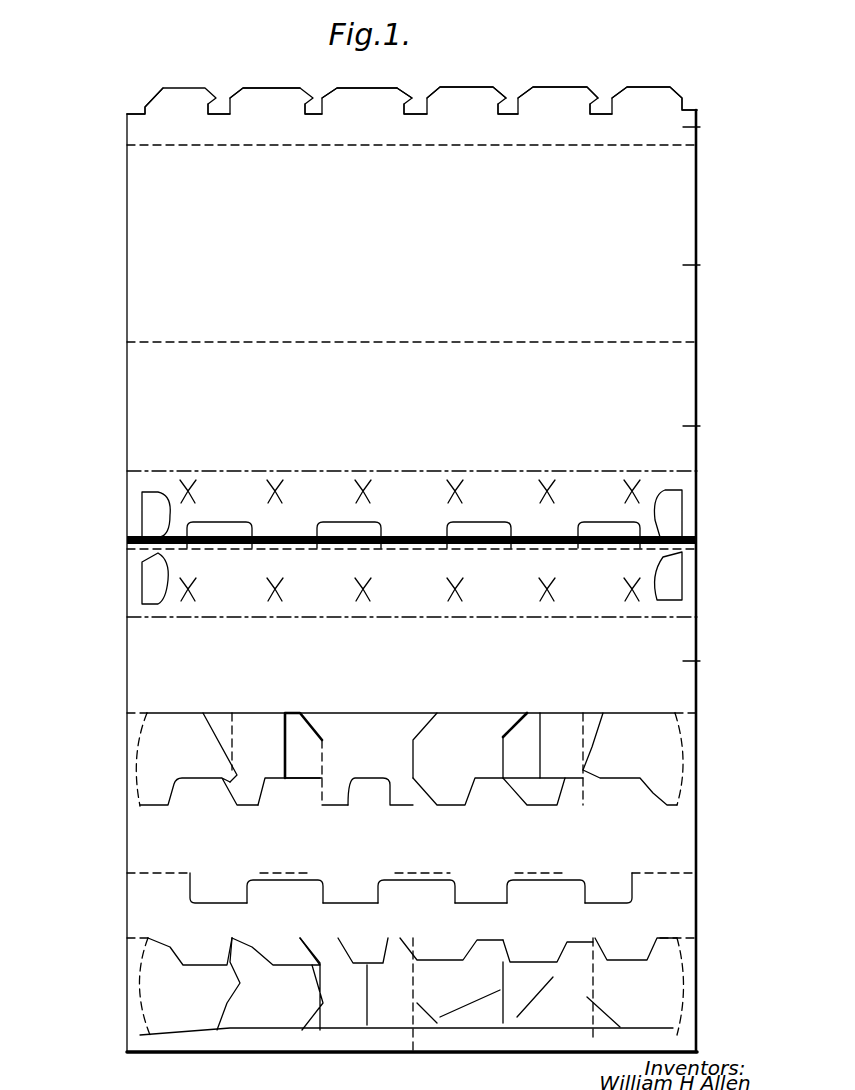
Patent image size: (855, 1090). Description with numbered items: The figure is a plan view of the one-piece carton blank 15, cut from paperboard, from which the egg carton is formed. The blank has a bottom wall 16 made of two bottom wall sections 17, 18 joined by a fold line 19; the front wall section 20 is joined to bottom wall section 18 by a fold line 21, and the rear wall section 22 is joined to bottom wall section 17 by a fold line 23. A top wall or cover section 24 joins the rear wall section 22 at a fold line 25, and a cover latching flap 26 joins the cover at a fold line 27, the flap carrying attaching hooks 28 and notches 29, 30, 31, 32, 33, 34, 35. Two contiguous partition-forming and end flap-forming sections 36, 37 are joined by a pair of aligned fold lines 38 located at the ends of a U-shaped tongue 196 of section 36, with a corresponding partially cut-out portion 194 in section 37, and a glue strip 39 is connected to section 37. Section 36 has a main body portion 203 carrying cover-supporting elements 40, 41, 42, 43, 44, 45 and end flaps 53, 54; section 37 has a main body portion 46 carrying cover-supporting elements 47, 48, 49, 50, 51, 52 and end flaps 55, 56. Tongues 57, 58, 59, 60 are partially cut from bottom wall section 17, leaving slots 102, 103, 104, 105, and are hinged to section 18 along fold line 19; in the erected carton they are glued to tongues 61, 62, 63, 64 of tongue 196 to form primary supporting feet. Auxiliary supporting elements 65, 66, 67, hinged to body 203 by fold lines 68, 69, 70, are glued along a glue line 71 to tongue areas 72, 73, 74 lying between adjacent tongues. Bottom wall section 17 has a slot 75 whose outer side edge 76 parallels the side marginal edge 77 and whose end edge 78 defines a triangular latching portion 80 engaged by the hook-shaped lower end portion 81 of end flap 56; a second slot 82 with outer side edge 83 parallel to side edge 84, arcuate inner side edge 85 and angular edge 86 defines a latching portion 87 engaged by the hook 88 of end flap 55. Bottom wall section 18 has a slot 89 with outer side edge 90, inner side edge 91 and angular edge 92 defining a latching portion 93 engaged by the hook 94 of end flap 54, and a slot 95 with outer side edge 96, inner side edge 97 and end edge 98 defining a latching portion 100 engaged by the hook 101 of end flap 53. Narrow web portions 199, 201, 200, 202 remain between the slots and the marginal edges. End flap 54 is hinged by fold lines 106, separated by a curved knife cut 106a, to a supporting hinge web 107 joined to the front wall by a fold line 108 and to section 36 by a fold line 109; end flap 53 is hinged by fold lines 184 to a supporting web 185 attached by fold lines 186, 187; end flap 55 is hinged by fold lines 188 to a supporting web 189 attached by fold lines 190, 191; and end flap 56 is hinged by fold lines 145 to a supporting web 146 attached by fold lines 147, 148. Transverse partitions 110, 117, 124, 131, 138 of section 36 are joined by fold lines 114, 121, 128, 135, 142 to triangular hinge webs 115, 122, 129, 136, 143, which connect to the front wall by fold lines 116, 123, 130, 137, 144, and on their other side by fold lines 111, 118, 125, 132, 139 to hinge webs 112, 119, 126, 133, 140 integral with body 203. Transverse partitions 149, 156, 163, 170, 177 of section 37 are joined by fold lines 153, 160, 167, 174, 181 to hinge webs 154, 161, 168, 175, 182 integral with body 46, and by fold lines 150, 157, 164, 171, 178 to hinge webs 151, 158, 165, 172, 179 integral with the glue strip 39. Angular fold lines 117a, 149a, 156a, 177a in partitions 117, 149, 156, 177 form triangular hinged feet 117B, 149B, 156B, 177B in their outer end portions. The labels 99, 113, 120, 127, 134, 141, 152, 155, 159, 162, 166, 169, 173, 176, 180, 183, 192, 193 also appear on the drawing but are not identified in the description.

The sheet body 15 is at (709, 409).
The side edge 16 is at (700, 504).
The upper score line 17 is at (408, 506).
The lower score line 18 is at (411, 589).
The panel 19 is at (545, 548).
The edge 20 is at (700, 661).
The fold line 21 is at (697, 617).
The edge 22 is at (700, 426).
The fold line 23 is at (697, 462).
The top panel 24 is at (700, 265).
The fold line 25 is at (692, 342).
The top edge 26 is at (700, 133).
The fold line 27 is at (695, 150).
The hook tab 28 is at (612, 102).
The end step 29 is at (142, 113).
The tab 30 is at (232, 102).
The tab 31 is at (320, 104).
The tab 32 is at (412, 106).
The tab 33 is at (512, 100).
The tab 34 is at (603, 102).
The end step 35 is at (690, 110).
The middle section 36 is at (698, 826).
The lower section 37 is at (678, 925).
The fold line 38 is at (690, 873).
The bottom edge 39 is at (697, 1043).
The tab 40 is at (199, 792).
The tab 41 is at (303, 792).
The tab 42 is at (380, 792).
The tab 43 is at (458, 792).
The tab 44 is at (543, 792).
The tab 45 is at (630, 788).
The fold line 46 is at (660, 925).
The notch 47 is at (190, 954).
The notch 48 is at (276, 954).
The notch 49 is at (363, 954).
The notch 50 is at (451, 995).
The notch 51 is at (548, 981).
The notch 52 is at (635, 989).
The end panel 53 is at (186, 759).
The end panel 54 is at (633, 759).
The end panel 55 is at (163, 986).
The end panel 56 is at (658, 986).
The block 57 is at (219, 534).
The block 58 is at (349, 534).
The block 59 is at (479, 534).
The block 60 is at (609, 534).
The slot 61 is at (218, 888).
The slot 62 is at (350, 892).
The slot 63 is at (481, 892).
The slot 64 is at (608, 888).
The tab 65 is at (285, 891).
The tab 66 is at (416, 891).
The tab 67 is at (546, 891).
The fold 68 is at (310, 880).
The fold 69 is at (450, 880).
The fold 70 is at (567, 880).
The strip 71 is at (290, 548).
The strip 72 is at (283, 524).
The strip 73 is at (422, 524).
The strip 74 is at (547, 524).
The clip 75 is at (676, 502).
The clip edge 76 is at (676, 506).
The clip 77 is at (684, 567).
The clip 78 is at (668, 513).
The adhesive band 80 is at (697, 536).
The panel 81 is at (585, 975).
The clip edge 82 is at (142, 496).
The clip 83 is at (142, 517).
The clip 84 is at (144, 567).
The clip 85 is at (160, 502).
The clip 86 is at (142, 532).
The clip 87 is at (145, 540).
The panel 88 is at (220, 984).
The clip 89 is at (684, 600).
The clip 90 is at (684, 588).
The clip 91 is at (660, 580).
The clip 92 is at (660, 570).
The clip 93 is at (690, 551).
The panel 94 is at (600, 780).
The clip 95 is at (148, 608).
The clip 96 is at (144, 597).
The clip 97 is at (170, 590).
The clip 98 is at (172, 572).
The clip 99 is at (660, 496).
The clip 100 is at (148, 550).
The panel 101 is at (228, 780).
The block 102 is at (222, 522).
The block 103 is at (330, 522).
The block 104 is at (492, 522).
The block 105 is at (598, 522).
The edge 106 is at (700, 772).
The edge 106a is at (697, 752).
The edge 107 is at (697, 730).
The edge 108 is at (697, 702).
The edge 109 is at (697, 792).
The panel 110 is at (561, 759).
The panel 111 is at (565, 767).
The fold 112 is at (583, 806).
The fold 113 is at (615, 806).
The panel 114 is at (578, 725).
The panel 115 is at (607, 714).
The panel 116 is at (595, 715).
The panel 117 is at (476, 745).
The panel 117a is at (451, 730).
The panel 117B is at (439, 766).
The panel 118 is at (475, 768).
The fold 119 is at (492, 806).
The fold 120 is at (527, 806).
The panel 121 is at (500, 718).
The panel 122 is at (503, 713).
The panel 123 is at (527, 713).
The panel 124 is at (378, 745).
The panel 125 is at (378, 768).
The fold 126 is at (413, 802).
The fold 127 is at (437, 805).
The panel 128 is at (395, 722).
The panel 129 is at (413, 713).
The panel 130 is at (437, 713).
The panel 131 is at (340, 748).
The panel 132 is at (343, 768).
The fold 133 is at (320, 800).
The fold 134 is at (322, 808).
The panel 135 is at (338, 715).
The panel 136 is at (330, 713).
The panel 137 is at (297, 713).
The panel 138 is at (277, 759).
The fold 139 is at (235, 800).
The fold 140 is at (230, 782).
The fold 141 is at (222, 805).
The panel 142 is at (240, 715).
The panel 143 is at (222, 713).
The panel 144 is at (210, 713).
The edge 145 is at (697, 1001).
The edge 146 is at (697, 976).
The edge 147 is at (697, 948).
The edge 148 is at (697, 1023).
The panel 149 is at (544, 997).
The panel 149a is at (520, 1005).
The panel 149B is at (515, 974).
The fold 150 is at (572, 1028).
The panel 151 is at (600, 1025).
The fold 152 is at (606, 1028).
The panel 153 is at (584, 946).
The panel 154 is at (601, 946).
The panel 155 is at (591, 940).
The panel 156 is at (458, 1004).
The panel 156a is at (418, 995).
The panel 156B is at (420, 975).
The fold 157 is at (505, 1012).
The fold 158 is at (512, 1022).
The fold 159 is at (510, 1028).
The panel 160 is at (463, 986).
The panel 161 is at (501, 945).
The panel 162 is at (511, 955).
The panel 163 is at (390, 991).
The panel 164 is at (388, 1013).
The fold 165 is at (400, 1045).
The fold 166 is at (437, 1025).
The panel 167 is at (400, 938).
The panel 168 is at (445, 946).
The panel 169 is at (418, 945).
The panel 170 is at (348, 995).
The fold 171 is at (330, 1028).
The fold 172 is at (316, 1050).
The fold 173 is at (306, 1035).
The panel 174 is at (344, 950).
The panel 175 is at (321, 940).
The panel 176 is at (310, 938).
The panel 177 is at (294, 984).
The panel 177a is at (282, 1030).
The panel 177B is at (314, 976).
The panel 178 is at (236, 1010).
The fold 179 is at (226, 1035).
The fold 180 is at (232, 1040).
The panel 181 is at (246, 955).
The panel 182 is at (226, 940).
The panel 183 is at (215, 938).
The edge 184 is at (135, 731).
The edge 185 is at (132, 760).
The edge 186 is at (136, 812).
The edge 187 is at (140, 713).
The edge 188 is at (135, 976).
The edge 189 is at (137, 998).
The edge 190 is at (140, 1040).
The edge 191 is at (146, 938).
The cross mark 192 is at (364, 602).
The cross mark 193 is at (366, 588).
The slot 194 is at (633, 891).
The tab row 196 is at (473, 879).
The clip edge 199 is at (684, 517).
The clip edge 200 is at (684, 575).
The clip 201 is at (140, 500).
The clip 202 is at (143, 580).
The fold line 203 is at (685, 842).